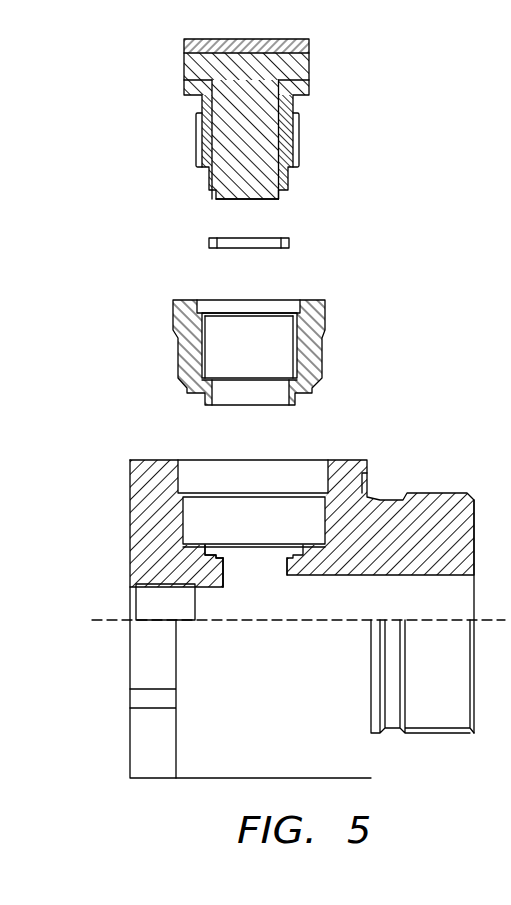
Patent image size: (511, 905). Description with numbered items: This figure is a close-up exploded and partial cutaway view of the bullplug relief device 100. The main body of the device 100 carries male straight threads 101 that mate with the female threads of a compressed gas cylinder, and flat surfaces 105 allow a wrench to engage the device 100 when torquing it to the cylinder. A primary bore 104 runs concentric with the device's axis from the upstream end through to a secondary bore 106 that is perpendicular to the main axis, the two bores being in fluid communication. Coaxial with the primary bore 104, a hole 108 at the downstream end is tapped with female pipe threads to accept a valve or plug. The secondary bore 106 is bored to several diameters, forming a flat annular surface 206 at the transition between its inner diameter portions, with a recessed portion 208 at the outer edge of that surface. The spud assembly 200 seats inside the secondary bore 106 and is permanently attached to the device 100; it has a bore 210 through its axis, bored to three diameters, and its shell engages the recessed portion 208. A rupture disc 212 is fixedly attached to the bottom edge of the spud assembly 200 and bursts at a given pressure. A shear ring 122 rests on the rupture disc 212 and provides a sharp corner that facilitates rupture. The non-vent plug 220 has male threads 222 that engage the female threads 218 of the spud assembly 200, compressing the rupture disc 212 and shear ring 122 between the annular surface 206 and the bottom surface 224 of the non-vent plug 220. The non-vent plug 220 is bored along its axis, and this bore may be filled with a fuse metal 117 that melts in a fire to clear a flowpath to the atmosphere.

The bullplug relief device 100 is at (112, 409).
The male straight threads 101 is at (425, 734).
The primary bore 104 is at (358, 606).
The flat surfaces 105 is at (131, 760).
The secondary bore 106 is at (274, 587).
The hole 108 is at (136, 601).
The fuse metal 117 is at (184, 69).
The shear ring 122 is at (292, 240).
The spud assembly 200 is at (173, 320).
The flat annular surface 206 is at (223, 562).
The recessed portion 208 is at (208, 557).
The bore 210 is at (269, 359).
The rupture disc 212 is at (260, 407).
The female threads 218 is at (292, 335).
The non-vent plug 220 is at (338, 58).
The male threads 222 is at (300, 141).
The bottom surface 224 is at (218, 201).